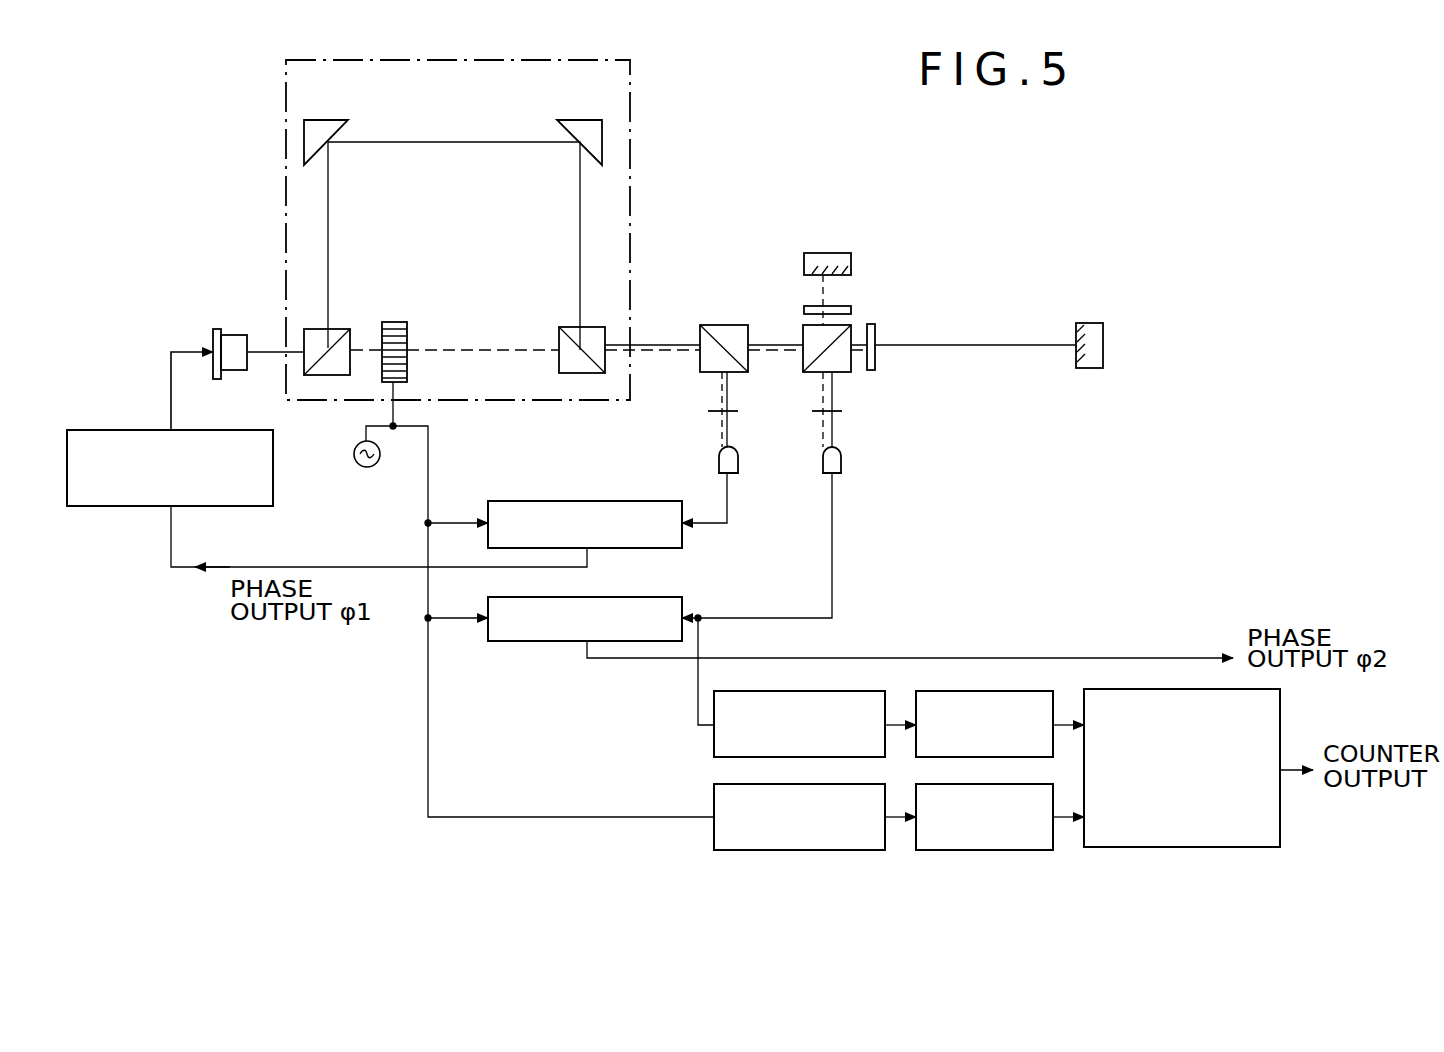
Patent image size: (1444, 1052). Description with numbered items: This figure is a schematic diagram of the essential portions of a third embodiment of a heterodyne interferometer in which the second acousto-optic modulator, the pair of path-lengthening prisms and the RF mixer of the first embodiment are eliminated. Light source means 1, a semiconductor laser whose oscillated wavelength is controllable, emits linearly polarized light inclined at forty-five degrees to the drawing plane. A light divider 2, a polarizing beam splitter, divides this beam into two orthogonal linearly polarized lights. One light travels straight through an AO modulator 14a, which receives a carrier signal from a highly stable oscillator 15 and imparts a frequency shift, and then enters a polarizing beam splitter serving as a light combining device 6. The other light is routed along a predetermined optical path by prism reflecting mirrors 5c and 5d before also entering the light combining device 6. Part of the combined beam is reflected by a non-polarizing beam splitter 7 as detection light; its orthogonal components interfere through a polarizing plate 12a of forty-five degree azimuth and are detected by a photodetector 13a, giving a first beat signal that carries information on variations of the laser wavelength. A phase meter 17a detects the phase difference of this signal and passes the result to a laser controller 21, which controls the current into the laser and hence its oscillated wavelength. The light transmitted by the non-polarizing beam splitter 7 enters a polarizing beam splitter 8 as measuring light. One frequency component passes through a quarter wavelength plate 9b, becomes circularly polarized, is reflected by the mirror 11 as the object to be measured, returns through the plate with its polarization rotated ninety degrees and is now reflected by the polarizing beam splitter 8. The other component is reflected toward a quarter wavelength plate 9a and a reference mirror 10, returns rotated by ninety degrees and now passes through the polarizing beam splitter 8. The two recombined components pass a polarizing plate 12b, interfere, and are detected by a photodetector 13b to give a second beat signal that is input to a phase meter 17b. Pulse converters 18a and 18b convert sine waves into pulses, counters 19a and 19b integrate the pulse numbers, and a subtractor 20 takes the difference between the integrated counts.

The light source means 1 is at (232, 343).
The light divider 2 is at (328, 343).
The prism reflecting mirror 5c is at (322, 127).
The prism reflecting mirror 5d is at (583, 122).
The light combining device 6 is at (562, 342).
The non-polarizing beam splitter 7 is at (720, 333).
The polarizing beam splitter 8 is at (812, 333).
The quarter wavelength plate 9a is at (845, 306).
The quarter wavelength plate 9b is at (878, 332).
The reference mirror 10 is at (815, 253).
The mirror 11 is at (1090, 323).
The polarizing plate 12a is at (738, 411).
The polarizing plate 12b is at (842, 411).
The photodetector 13a is at (738, 468).
The photodetector 13b is at (841, 468).
The AO modulator 14a is at (400, 328).
The highly stable oscillator 15 is at (353, 455).
The phase meter 17a is at (552, 501).
The phase meter 17b is at (518, 643).
The pulse converter 18a is at (787, 690).
The pulse converter 18b is at (763, 850).
The counter 19a is at (966, 690).
The counter 19b is at (945, 850).
The subtractor 20 is at (1157, 847).
The laser controller 21 is at (99, 507).